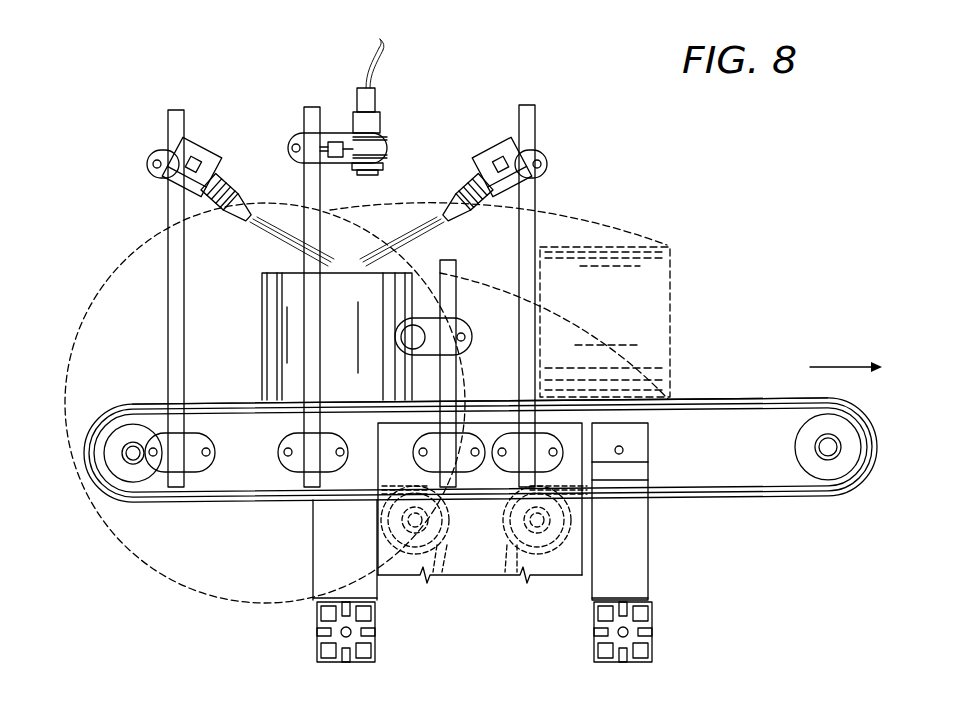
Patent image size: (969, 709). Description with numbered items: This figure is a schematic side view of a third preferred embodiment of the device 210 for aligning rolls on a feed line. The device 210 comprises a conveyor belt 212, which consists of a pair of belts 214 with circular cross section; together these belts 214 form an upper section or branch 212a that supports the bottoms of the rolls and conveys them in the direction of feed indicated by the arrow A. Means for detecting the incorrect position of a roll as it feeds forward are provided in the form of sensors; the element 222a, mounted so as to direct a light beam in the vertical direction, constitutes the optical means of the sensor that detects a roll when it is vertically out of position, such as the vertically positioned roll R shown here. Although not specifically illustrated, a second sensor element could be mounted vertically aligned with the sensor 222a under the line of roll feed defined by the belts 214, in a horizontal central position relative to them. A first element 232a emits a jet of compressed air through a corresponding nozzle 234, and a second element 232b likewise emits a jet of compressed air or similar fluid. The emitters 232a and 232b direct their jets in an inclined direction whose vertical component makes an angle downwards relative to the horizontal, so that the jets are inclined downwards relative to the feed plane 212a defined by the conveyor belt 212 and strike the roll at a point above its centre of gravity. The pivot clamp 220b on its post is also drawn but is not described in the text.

The device 210 is at (704, 212).
The conveyor belt 212 is at (731, 509).
The upper section or branch 212a is at (701, 364).
The belts 214 is at (407, 273).
The pivot clamp on post 220b is at (416, 332).
The optical element 222a is at (360, 122).
The first element for emitting a jet of compressed air 232a is at (224, 174).
The second element for emitting a jet of compressed air 232b is at (487, 124).
The nozzle 234 is at (235, 205).
The radius of rotation R is at (506, 268).
The direction of feed A is at (846, 355).